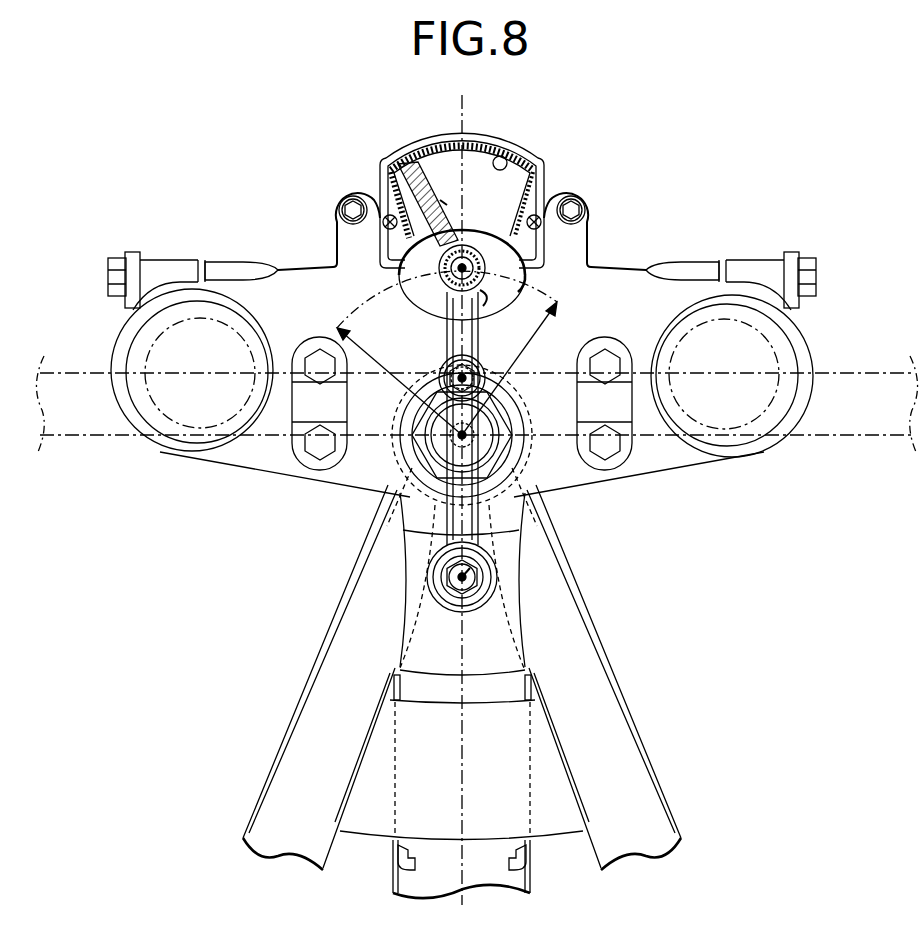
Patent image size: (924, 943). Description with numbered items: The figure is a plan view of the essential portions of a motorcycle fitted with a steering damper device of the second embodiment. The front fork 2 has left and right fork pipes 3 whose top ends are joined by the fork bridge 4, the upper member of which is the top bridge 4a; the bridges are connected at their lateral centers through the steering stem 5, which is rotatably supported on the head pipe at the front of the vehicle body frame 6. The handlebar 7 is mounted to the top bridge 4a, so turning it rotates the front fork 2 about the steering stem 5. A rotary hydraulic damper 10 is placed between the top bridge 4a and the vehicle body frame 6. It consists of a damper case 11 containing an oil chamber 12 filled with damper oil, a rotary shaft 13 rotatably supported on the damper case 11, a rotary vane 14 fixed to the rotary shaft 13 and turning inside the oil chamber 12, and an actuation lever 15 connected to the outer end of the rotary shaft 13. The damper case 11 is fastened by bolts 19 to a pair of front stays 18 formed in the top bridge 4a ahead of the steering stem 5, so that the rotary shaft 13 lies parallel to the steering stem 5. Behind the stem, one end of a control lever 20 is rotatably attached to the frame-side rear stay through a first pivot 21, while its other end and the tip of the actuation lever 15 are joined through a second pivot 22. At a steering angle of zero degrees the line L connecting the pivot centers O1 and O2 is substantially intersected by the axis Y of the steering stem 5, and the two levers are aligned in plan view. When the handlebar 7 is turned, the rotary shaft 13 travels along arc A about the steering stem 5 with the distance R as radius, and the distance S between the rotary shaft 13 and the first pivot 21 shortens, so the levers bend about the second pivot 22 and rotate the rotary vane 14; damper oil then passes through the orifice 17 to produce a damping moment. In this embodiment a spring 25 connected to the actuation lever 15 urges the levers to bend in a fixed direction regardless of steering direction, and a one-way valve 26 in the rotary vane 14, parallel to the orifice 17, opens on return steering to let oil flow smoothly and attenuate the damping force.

The front fork 2 is at (818, 343).
The fork pipe 3 is at (135, 345).
The fork bridge 4 is at (650, 265).
The top bridge 4a is at (688, 293).
The steering stem 5 is at (400, 491).
The vehicle body frame 6 is at (650, 731).
The handlebar 7 is at (862, 440).
The rotary hydraulic damper 10 is at (480, 183).
The damper case 11 is at (396, 175).
The oil chamber 12 is at (505, 160).
The rotary shaft 13 is at (474, 275).
The rotary vane 14 is at (440, 162).
The actuation lever 15 is at (478, 338).
The orifice 17 is at (427, 210).
The front stay 18 is at (335, 245).
The bolt 19 is at (340, 205).
The control lever 20 is at (472, 494).
The first pivot 21 is at (448, 587).
The second pivot 22 is at (505, 398).
The spring 25 is at (430, 291).
The one-way valve 26 is at (440, 205).
The arc A is at (352, 301).
The distance R is at (378, 367).
The distance S is at (509, 368).
The line L is at (393, 437).
The axis Y is at (466, 437).
The center O1 is at (467, 579).
The center O2 is at (448, 370).